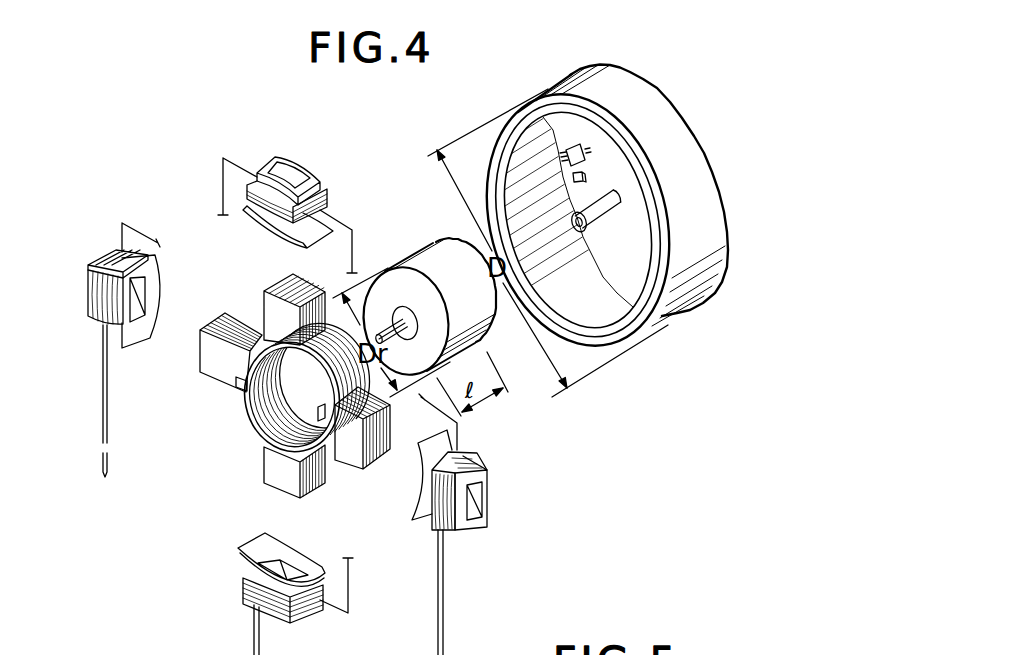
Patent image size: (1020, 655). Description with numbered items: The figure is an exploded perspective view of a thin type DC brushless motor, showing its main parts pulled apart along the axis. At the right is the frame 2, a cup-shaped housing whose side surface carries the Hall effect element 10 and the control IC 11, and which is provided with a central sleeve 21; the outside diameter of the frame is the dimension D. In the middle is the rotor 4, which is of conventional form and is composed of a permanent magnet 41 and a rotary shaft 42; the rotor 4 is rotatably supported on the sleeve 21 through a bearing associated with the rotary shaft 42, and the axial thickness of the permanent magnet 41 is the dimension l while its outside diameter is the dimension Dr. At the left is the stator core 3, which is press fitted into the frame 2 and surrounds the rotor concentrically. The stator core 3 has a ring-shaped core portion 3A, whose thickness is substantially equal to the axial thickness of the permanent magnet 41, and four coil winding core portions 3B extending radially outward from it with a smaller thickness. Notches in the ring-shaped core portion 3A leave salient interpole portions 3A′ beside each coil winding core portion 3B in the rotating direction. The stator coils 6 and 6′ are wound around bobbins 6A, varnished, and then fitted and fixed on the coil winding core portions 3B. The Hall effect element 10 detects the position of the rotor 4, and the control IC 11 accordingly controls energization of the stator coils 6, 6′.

The frame 2 is at (590, 67).
The stator core 3 is at (233, 295).
The ring-shaped core portion 3A is at (253, 402).
The salient interpole portions 3A′ is at (237, 381).
The coil winding core portions 3B is at (353, 443).
The rotor 4 is at (408, 246).
The stator coils 6 is at (329, 193).
The bobbins 6A is at (312, 165).
The stator coils 6′ is at (110, 323).
The Hall effect element 10 is at (588, 180).
The control IC 11 is at (576, 147).
The sleeve 21 is at (603, 213).
The permanent magnet 41 is at (496, 335).
The rotary shaft 42 is at (390, 338).